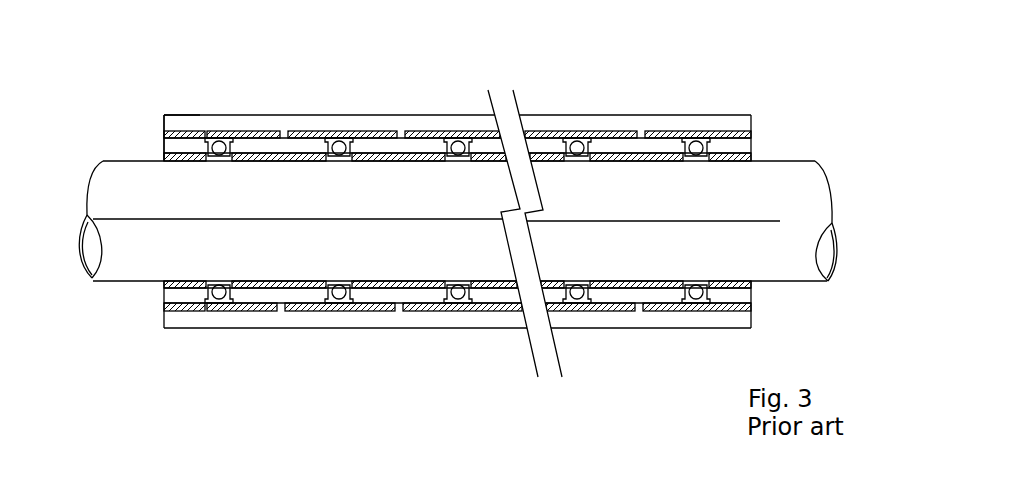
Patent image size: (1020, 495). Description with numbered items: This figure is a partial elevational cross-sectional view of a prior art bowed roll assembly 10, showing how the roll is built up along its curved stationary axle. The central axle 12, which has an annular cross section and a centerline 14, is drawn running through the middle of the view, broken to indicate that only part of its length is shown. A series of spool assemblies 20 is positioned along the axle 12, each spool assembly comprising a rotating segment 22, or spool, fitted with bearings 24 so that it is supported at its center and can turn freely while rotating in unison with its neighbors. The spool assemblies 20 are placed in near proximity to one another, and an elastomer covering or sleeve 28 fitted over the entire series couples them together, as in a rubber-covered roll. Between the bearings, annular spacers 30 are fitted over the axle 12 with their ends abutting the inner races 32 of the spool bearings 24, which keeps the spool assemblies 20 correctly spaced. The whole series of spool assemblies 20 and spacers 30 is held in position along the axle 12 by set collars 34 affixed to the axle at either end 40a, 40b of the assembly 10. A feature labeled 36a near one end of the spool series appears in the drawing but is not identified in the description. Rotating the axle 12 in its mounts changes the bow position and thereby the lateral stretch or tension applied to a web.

The bowed roll assembly 10 is at (797, 88).
The central axle 12 is at (122, 172).
The centerline 14 is at (760, 217).
The spool assembly 20 is at (243, 131).
The rotating segment 22 is at (365, 313).
The bearing 24 is at (337, 128).
The elastomer covering 28 is at (633, 330).
The annular spacer 30 is at (273, 152).
The inner race 32 is at (352, 150).
The set collar 34 is at (182, 148).
The housing end face 36a is at (162, 118).
The first end of the assembly 40a is at (113, 282).
The second end of the assembly 40b is at (780, 288).